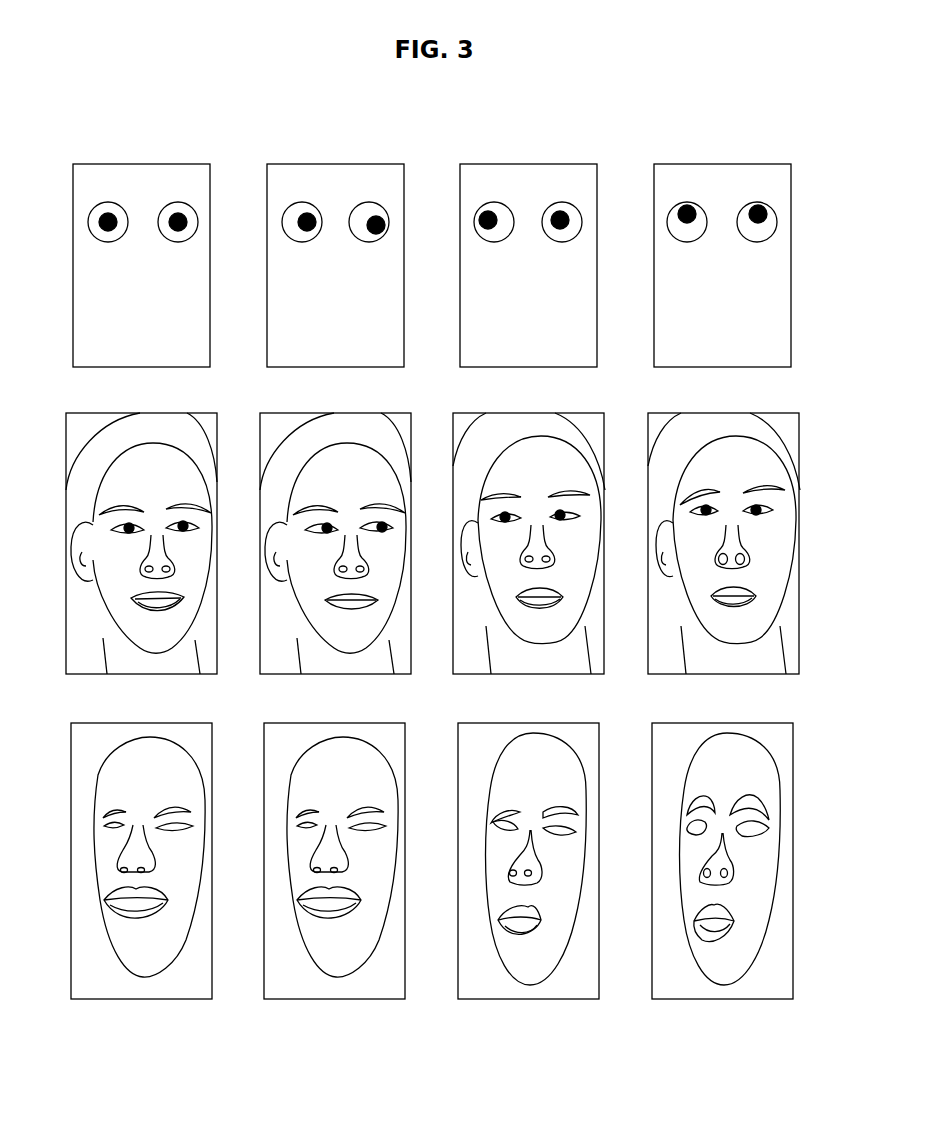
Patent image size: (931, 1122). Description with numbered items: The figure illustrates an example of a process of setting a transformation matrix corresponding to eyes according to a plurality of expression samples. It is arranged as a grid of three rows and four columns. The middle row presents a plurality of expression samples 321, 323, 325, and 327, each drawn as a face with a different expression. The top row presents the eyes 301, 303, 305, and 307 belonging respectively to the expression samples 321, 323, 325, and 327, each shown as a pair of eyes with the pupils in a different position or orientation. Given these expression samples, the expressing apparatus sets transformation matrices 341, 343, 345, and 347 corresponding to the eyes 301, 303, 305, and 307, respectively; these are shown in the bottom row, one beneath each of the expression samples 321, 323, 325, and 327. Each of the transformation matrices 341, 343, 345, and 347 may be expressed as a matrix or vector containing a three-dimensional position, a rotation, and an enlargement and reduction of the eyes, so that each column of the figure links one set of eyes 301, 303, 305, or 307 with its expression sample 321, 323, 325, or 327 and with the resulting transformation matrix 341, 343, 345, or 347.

The eyes 301 is at (140, 164).
The eyes 303 is at (334, 164).
The eyes 305 is at (527, 164).
The eyes 307 is at (721, 164).
The expression sample 321 is at (142, 413).
The expression sample 323 is at (336, 413).
The expression sample 325 is at (529, 413).
The expression sample 327 is at (723, 413).
The transformation matrix 341 is at (142, 723).
The transformation matrix 343 is at (336, 723).
The transformation matrix 345 is at (529, 723).
The transformation matrix 347 is at (723, 723).